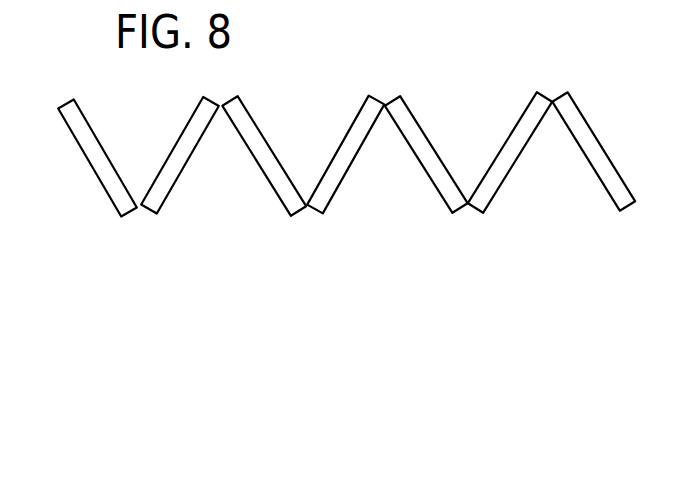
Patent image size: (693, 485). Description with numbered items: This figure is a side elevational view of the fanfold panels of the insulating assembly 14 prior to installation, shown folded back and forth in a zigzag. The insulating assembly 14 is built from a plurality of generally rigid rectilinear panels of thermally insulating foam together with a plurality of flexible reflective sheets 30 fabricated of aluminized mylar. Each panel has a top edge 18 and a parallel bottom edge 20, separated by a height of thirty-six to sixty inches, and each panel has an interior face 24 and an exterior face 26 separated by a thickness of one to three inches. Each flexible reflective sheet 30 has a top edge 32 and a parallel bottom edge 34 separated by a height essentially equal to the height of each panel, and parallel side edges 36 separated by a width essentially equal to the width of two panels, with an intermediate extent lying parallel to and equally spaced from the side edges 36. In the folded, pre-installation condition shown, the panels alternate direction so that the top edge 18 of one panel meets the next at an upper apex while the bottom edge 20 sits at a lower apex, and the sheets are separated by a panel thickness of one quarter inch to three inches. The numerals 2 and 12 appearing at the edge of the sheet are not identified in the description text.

The assembly (cut-off numeral 12) 2 is at (317, 157).
The folded structure 12 is at (20, 203).
The insulating assembly 14 is at (536, 93).
The top edge 18 is at (367, 154).
The bottom edge 20 is at (298, 211).
The interior face 24 is at (70, 163).
The exterior face 26 is at (103, 188).
The flexible reflective sheets 30 is at (180, 137).
The top edge 32 is at (398, 97).
The bottom edge 34 is at (566, 131).
The side edges 36 is at (230, 103).